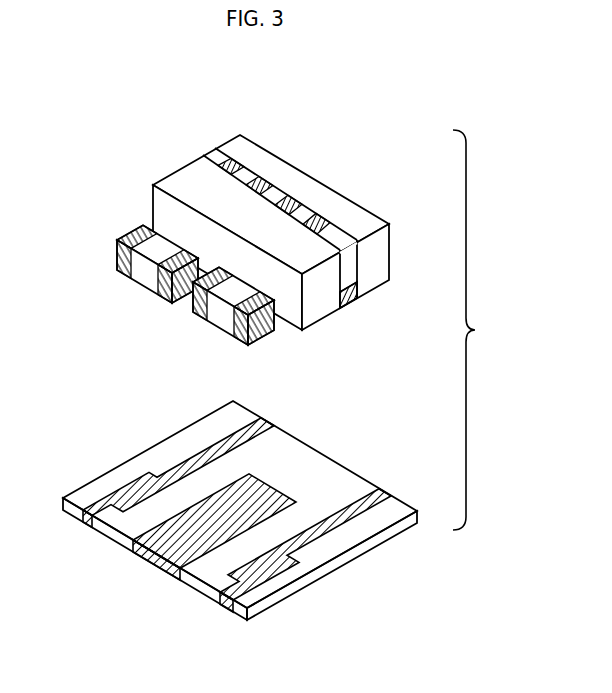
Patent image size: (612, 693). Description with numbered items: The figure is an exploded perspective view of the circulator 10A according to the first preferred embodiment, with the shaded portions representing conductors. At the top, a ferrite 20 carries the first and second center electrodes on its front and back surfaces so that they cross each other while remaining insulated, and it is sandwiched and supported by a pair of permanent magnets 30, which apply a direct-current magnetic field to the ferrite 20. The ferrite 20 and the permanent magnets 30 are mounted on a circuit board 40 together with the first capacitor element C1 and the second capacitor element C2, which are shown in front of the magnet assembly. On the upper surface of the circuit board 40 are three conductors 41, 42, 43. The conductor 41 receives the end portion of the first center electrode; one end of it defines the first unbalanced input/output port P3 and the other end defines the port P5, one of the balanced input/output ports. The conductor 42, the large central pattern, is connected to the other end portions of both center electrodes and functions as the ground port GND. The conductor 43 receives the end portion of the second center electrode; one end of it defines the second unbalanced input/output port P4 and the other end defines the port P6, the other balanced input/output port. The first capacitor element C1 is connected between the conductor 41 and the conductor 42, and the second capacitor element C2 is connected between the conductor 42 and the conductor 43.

The circulator 10A is at (475, 330).
The ferrite 20 is at (339, 243).
The permanent magnets 30 is at (178, 178).
The first capacitor element C1 is at (143, 280).
The second capacitor element C2 is at (220, 323).
The circuit board 40 is at (340, 463).
The conductor 41 is at (176, 474).
The conductor 42 is at (214, 543).
The conductor 43 is at (314, 557).
The first unbalanced input/output port P3 is at (86, 536).
The second unbalanced input/output port P4 is at (223, 619).
The balanced input/output port P5 is at (266, 405).
The balanced input/output port P6 is at (399, 482).
The ground port GND is at (156, 578).